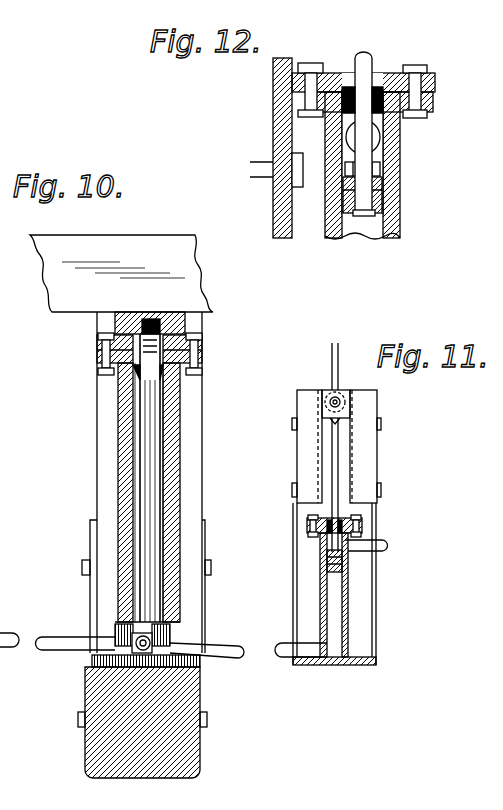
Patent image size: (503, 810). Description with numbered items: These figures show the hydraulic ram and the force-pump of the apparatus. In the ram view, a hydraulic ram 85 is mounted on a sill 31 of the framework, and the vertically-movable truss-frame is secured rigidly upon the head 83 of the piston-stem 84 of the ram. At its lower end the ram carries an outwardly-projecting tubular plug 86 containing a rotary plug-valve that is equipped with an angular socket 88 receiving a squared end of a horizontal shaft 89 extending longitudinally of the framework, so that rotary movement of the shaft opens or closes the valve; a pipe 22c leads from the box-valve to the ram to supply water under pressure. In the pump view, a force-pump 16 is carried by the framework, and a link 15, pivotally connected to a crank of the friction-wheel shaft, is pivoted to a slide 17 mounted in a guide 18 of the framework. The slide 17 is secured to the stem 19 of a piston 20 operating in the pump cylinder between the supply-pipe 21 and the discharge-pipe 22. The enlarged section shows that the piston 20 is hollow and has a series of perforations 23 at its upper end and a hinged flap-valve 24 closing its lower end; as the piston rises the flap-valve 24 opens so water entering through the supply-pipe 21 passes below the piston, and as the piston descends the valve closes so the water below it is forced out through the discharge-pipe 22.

In FIG. 10, the head 83 is at (115, 326).
In FIG. 10, the piston-stem 84 is at (137, 467).
In FIG. 10, the hydraulic ram 85 is at (122, 497).
In FIG. 10, the tubular plug 86 is at (175, 633).
In FIG. 10, the angular socket 88 is at (118, 650).
In FIG. 10, the horizontal shaft 89 is at (55, 632).
In FIG. 10, the pipe 22c is at (230, 659).
In FIG. 10, the sill 31 is at (113, 744).
In FIG. 11, the link 15 is at (332, 351).
In FIG. 11, the force-pump 16 is at (350, 584).
In FIG. 12, the force-pump 16 is at (342, 164).
In FIG. 11, the slide 17 is at (342, 412).
In FIG. 11, the guide 18 is at (362, 434).
In FIG. 11, the stem 19 is at (338, 461).
In FIG. 12, the stem 19 is at (345, 138).
In FIG. 11, the piston 20 is at (343, 564).
In FIG. 12, the piston 20 is at (347, 200).
In FIG. 11, the supply-pipe 21 is at (384, 542).
In FIG. 12, the supply-pipe 21 is at (380, 140).
In FIG. 11, the discharge-pipe 22 is at (291, 658).
In FIG. 12, the perforations 23 is at (380, 176).
In FIG. 12, the hinged flap-valve 24 is at (360, 217).